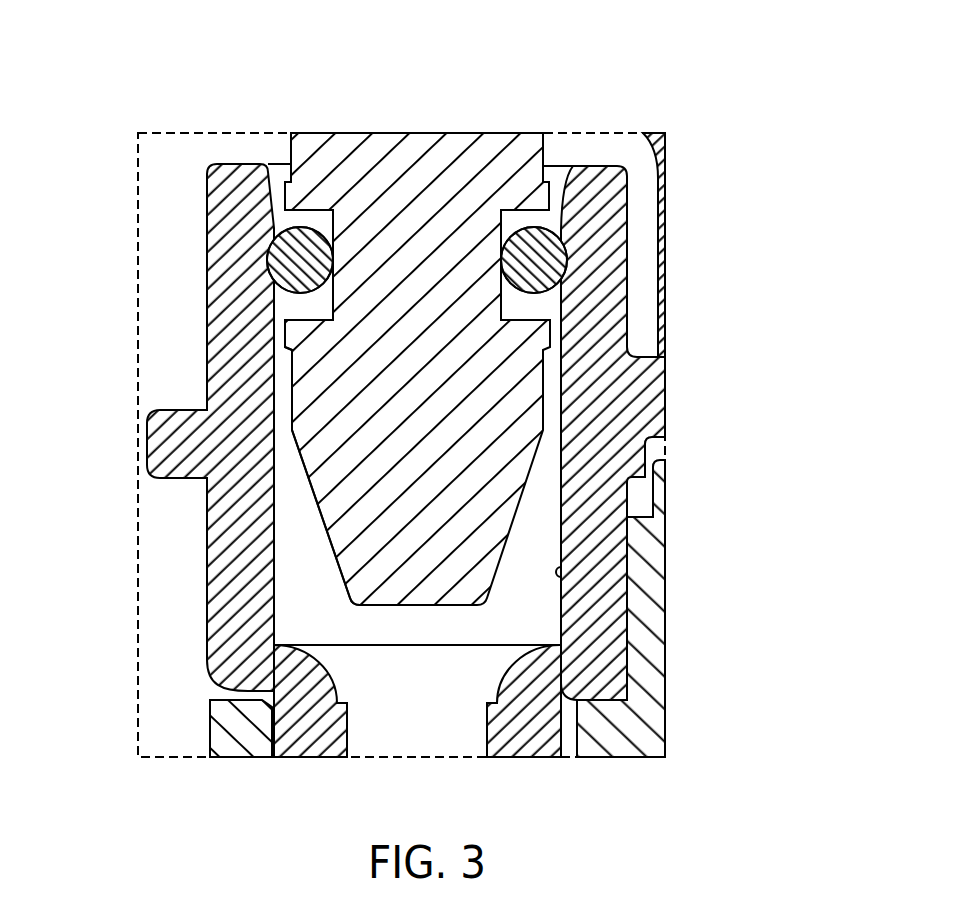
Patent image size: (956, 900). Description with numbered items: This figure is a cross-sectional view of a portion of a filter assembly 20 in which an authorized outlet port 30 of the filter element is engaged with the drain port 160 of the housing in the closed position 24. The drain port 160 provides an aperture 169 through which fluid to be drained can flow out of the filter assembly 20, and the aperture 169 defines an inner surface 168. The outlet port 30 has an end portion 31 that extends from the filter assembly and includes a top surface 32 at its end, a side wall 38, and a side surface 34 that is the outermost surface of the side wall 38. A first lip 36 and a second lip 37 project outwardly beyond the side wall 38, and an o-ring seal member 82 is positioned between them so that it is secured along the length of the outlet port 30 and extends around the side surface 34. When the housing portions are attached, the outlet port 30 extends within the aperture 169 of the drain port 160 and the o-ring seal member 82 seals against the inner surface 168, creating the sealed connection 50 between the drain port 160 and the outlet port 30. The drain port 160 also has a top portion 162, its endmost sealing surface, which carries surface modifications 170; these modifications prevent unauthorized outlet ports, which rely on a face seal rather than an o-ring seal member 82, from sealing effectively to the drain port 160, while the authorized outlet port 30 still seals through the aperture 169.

The filter assembly 20 is at (614, 68).
The closed position 24 is at (732, 113).
The sealed connection 50 is at (768, 145).
The outlet port 30 is at (530, 485).
The end portion 31 is at (498, 518).
The top surface 32 is at (382, 607).
The side surface 34 is at (308, 516).
The first lip 36 is at (285, 338).
The second lip 37 is at (550, 195).
The side wall 38 is at (330, 577).
The o-ring seal member 82 is at (272, 243).
The drain port 160 is at (205, 321).
The top portion 162 is at (237, 164).
The inner surface 168 is at (563, 573).
The aperture 169 is at (505, 622).
The surface modifications 170 is at (237, 164).